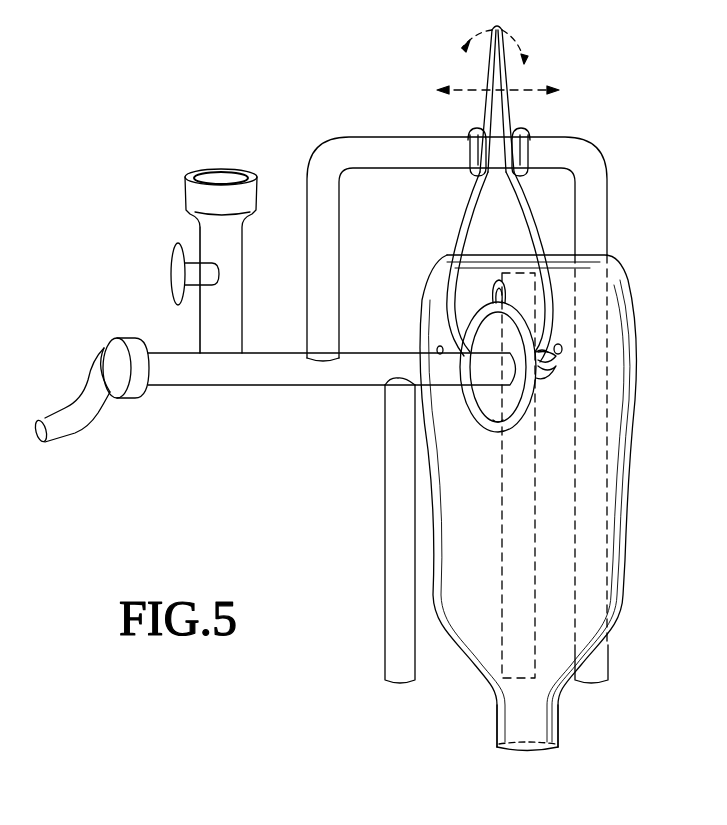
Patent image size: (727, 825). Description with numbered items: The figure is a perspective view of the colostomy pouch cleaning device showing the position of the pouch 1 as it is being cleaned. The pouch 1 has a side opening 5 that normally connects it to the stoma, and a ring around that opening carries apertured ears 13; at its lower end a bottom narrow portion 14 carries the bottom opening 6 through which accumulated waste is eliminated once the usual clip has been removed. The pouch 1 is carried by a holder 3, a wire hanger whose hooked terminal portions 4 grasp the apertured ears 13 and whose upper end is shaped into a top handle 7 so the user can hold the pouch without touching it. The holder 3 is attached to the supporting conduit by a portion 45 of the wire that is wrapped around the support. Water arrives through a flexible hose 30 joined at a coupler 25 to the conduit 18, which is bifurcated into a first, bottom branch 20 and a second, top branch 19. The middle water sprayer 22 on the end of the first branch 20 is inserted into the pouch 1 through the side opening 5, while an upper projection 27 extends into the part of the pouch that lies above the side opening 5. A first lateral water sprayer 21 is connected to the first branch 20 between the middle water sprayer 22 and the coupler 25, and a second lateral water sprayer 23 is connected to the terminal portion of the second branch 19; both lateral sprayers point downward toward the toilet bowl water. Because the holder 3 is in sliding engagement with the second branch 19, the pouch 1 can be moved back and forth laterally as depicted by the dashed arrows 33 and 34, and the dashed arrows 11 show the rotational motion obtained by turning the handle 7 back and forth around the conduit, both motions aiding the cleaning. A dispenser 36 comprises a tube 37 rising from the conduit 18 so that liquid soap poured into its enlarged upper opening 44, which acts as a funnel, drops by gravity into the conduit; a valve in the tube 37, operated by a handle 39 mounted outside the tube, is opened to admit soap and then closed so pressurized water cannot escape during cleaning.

The colostomy pouch 1 is at (637, 545).
The holder 3 is at (545, 212).
The hooked terminal portions 4 is at (563, 355).
The side opening 5 is at (520, 428).
The bottom opening 6 is at (530, 752).
The top handle 7 is at (498, 30).
The dashed arrows 11 is at (540, 56).
The apertured ears 13 is at (497, 285).
The bottom narrow portion 14 is at (566, 708).
The conduit 18 is at (252, 386).
The second branch 19 is at (372, 140).
The first branch 20 is at (446, 392).
The first lateral water sprayer 21 is at (385, 578).
The middle water sprayer 22 is at (487, 432).
The second lateral water sprayer 23 is at (610, 668).
The coupler 25 is at (123, 400).
The upper projection 27 is at (540, 278).
The flexible hose 30 is at (85, 375).
The dashed arrow 33 is at (462, 90).
The dashed arrow 34 is at (545, 90).
The dispenser 36 is at (247, 263).
The tube 37 is at (236, 316).
The handle 39 is at (172, 248).
The enlarged upper opening 44 is at (226, 176).
The portion 45 is at (462, 152).